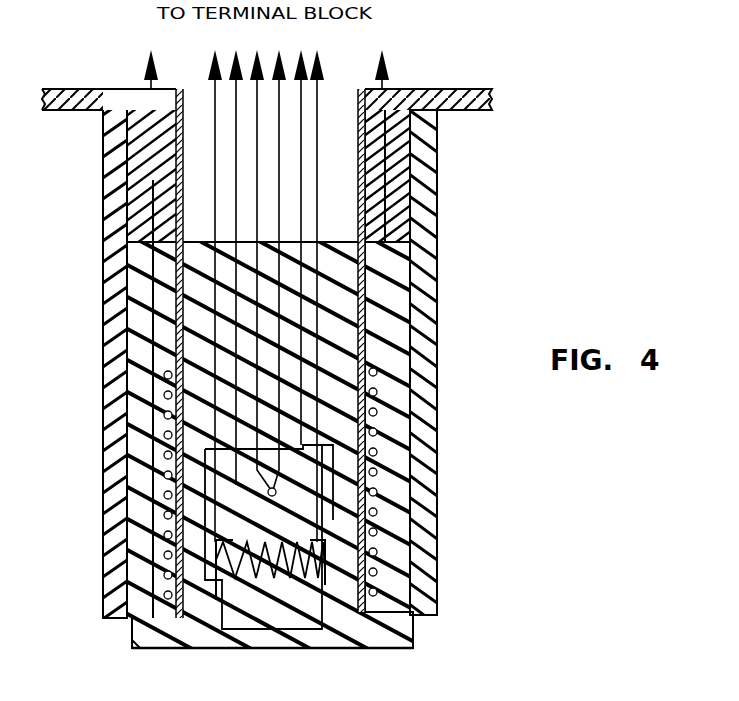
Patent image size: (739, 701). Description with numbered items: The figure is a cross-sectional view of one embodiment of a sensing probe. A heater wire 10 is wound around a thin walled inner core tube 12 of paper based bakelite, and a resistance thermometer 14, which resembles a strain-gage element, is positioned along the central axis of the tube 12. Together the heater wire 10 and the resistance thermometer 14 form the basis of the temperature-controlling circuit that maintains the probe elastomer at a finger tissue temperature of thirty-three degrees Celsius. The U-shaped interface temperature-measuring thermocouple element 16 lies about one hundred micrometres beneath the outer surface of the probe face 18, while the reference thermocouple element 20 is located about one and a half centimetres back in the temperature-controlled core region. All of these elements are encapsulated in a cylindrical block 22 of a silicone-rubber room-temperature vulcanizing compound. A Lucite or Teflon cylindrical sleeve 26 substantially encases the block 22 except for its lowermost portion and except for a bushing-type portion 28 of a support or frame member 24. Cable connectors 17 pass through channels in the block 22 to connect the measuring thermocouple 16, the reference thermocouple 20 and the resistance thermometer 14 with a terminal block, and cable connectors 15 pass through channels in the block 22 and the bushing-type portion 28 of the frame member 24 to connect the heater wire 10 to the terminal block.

The heater wire 10 is at (162, 470).
The inner core tube 12 is at (176, 240).
The resistance thermometer 14 is at (216, 590).
The cable connectors 15 is at (150, 90).
The interface temperature-measuring thermocouple element 16 is at (272, 632).
The cable connectors 17 is at (325, 48).
The probe face 18 is at (198, 650).
The reference thermocouple element 20 is at (268, 493).
The cylindrical block 22 is at (130, 298).
The support or frame member 24 is at (468, 89).
The cylindrical sleeve 26 is at (437, 205).
The bushing-type portion 28 is at (138, 188).